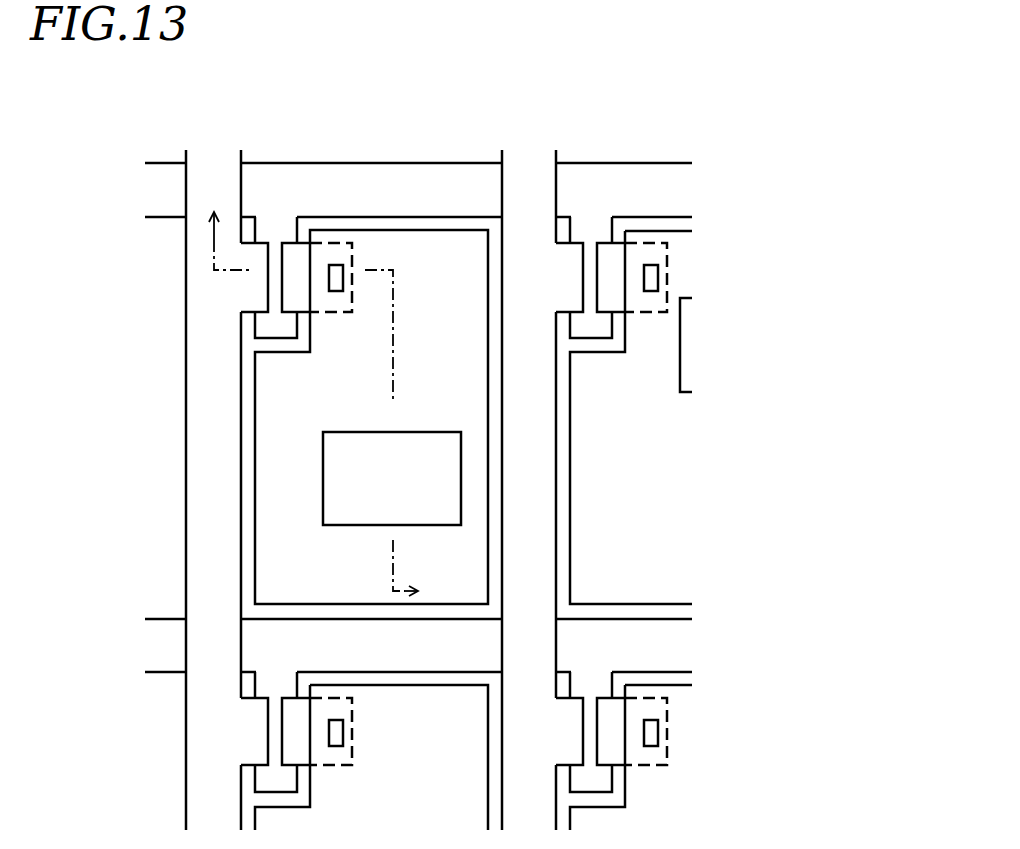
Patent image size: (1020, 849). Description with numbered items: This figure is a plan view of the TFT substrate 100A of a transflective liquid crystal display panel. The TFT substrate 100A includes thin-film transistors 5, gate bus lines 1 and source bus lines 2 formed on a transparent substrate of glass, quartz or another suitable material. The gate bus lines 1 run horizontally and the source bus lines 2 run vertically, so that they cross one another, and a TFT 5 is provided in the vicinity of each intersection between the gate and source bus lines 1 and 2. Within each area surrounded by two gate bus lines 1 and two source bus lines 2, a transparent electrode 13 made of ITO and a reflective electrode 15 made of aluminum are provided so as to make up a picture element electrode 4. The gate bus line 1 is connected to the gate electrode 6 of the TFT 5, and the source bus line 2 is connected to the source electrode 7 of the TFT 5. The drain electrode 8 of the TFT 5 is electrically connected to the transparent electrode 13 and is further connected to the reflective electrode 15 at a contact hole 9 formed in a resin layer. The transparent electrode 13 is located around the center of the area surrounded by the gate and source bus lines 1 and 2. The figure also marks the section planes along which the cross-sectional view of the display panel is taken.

The TFT substrate 100A is at (763, 163).
The gate bus line 1 is at (678, 190).
The source bus line 2 is at (213, 766).
The picture element electrode 4 is at (128, 417).
The thin-film transistor 5 is at (250, 340).
The gate electrode 6 is at (277, 270).
The source electrode 7 is at (256, 255).
The drain electrode 8 is at (297, 270).
The contact hole 9 is at (335, 265).
The transparent electrode 13 is at (375, 497).
The reflective electrode 15 is at (268, 498).